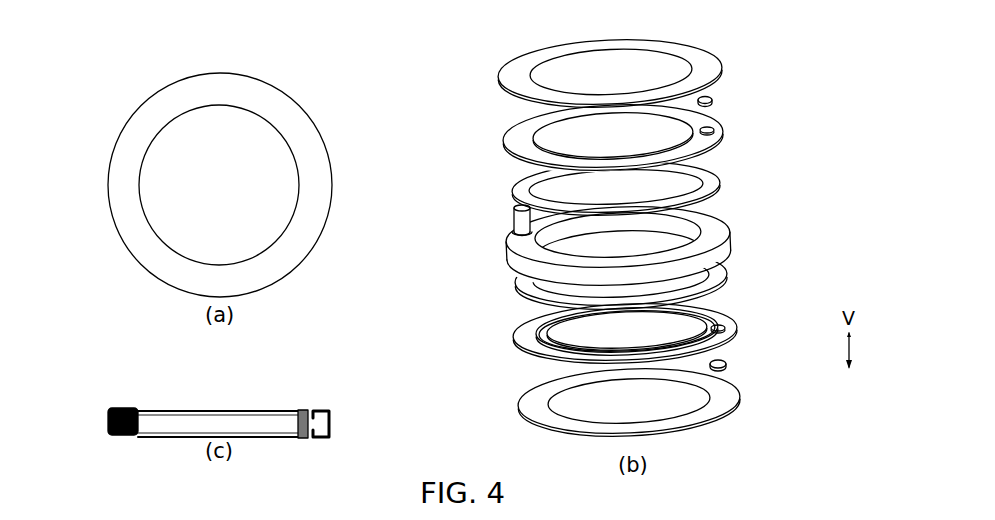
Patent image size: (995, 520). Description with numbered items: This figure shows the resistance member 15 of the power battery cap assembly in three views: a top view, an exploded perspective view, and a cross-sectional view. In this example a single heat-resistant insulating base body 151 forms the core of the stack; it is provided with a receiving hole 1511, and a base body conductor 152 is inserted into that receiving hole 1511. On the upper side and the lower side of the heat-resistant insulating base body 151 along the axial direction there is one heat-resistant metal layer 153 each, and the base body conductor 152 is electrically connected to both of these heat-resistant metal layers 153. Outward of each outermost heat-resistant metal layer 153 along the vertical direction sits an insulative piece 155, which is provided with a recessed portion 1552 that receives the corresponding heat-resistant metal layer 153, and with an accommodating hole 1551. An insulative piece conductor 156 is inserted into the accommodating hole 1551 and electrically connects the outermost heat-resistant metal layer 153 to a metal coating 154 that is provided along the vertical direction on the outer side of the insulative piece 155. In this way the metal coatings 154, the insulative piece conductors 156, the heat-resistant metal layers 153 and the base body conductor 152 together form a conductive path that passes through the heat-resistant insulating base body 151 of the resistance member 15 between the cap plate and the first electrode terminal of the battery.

The resistance member 15 is at (765, 145).
The heat-resistant insulating base body 151 is at (113, 420).
The receiving hole 1511 is at (318, 414).
The base body conductor 152 is at (514, 207).
The heat-resistant metal layer 153 is at (528, 187).
The metal coating 154 is at (132, 155).
The insulative piece 155 is at (304, 411).
The accommodating hole 1551 is at (122, 408).
The recessed portion 1552 is at (532, 333).
The insulative piece conductor 156 is at (712, 98).